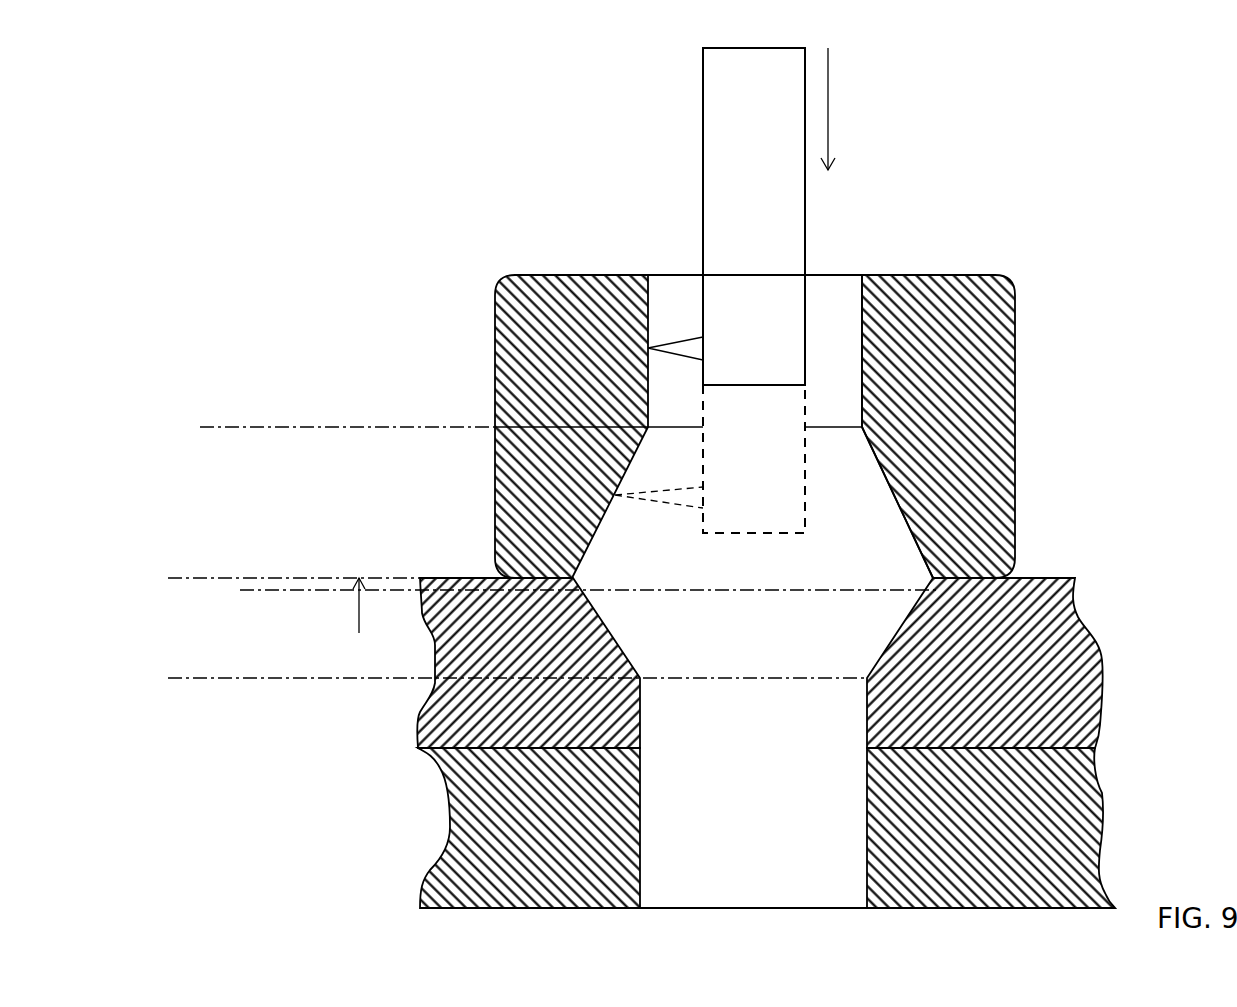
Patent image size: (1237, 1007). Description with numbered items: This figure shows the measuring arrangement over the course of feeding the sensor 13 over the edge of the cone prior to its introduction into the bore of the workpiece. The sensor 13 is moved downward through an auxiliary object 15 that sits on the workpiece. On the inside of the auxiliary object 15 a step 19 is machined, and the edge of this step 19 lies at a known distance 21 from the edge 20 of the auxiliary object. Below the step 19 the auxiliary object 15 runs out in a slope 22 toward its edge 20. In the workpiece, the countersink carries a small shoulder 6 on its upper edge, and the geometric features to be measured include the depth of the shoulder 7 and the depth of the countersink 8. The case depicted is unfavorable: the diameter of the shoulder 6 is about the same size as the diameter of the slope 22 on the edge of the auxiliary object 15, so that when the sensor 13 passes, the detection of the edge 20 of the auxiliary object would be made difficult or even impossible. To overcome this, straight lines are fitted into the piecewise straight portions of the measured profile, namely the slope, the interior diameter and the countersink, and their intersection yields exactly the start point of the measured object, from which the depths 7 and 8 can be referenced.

The sensor 13 is at (777, 312).
The auxiliary object 15 is at (970, 317).
The step 19 is at (862, 427).
The slope 22 is at (900, 500).
The edge of the auxiliary object 20 is at (975, 568).
The shoulder 6 is at (950, 590).
The known distance 21 is at (355, 427).
The depth of countersink 8 is at (205, 733).
The depth of shoulder 7 is at (268, 647).